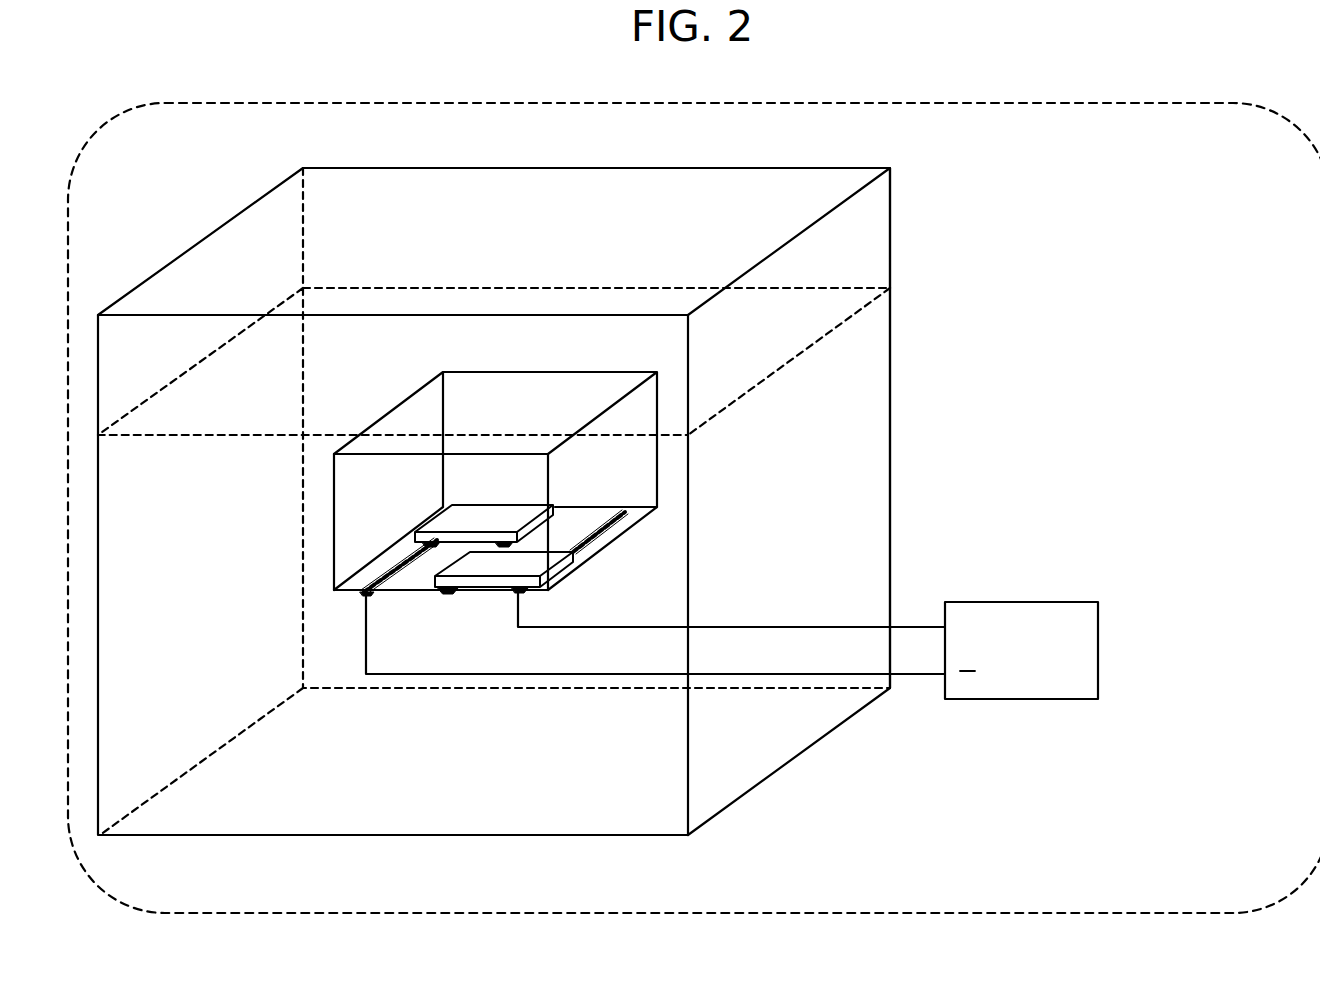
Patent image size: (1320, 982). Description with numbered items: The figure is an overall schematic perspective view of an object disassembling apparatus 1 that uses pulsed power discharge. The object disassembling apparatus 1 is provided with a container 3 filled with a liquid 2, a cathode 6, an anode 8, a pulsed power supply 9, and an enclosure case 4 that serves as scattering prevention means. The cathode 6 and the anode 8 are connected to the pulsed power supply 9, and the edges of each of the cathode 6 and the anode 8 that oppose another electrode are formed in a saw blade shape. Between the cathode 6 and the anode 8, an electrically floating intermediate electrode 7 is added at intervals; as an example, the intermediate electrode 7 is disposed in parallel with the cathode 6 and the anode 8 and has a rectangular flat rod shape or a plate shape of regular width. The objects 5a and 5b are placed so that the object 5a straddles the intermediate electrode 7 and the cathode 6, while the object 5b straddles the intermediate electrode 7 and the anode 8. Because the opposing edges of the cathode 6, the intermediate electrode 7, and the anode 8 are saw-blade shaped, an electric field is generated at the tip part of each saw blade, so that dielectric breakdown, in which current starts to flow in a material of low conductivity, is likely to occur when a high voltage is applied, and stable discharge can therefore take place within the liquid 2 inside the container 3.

The object disassembling apparatus 1 is at (168, 105).
The liquid 2 is at (870, 408).
The container 3 is at (893, 503).
The enclosure case 4 is at (418, 406).
The object 5a is at (456, 517).
The object 5b is at (478, 563).
The cathode 6 is at (375, 570).
The intermediate electrode 7 is at (440, 593).
The anode 8 is at (603, 532).
The pulsed power supply 9 is at (1000, 602).